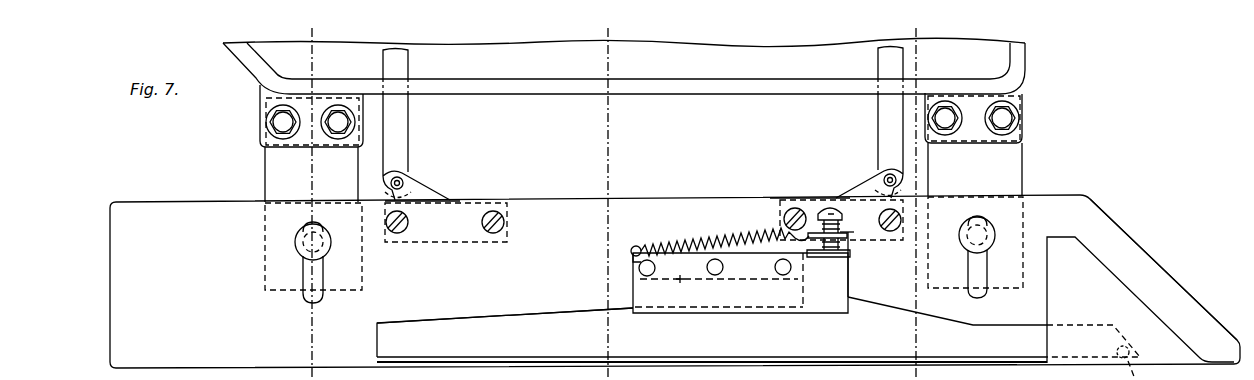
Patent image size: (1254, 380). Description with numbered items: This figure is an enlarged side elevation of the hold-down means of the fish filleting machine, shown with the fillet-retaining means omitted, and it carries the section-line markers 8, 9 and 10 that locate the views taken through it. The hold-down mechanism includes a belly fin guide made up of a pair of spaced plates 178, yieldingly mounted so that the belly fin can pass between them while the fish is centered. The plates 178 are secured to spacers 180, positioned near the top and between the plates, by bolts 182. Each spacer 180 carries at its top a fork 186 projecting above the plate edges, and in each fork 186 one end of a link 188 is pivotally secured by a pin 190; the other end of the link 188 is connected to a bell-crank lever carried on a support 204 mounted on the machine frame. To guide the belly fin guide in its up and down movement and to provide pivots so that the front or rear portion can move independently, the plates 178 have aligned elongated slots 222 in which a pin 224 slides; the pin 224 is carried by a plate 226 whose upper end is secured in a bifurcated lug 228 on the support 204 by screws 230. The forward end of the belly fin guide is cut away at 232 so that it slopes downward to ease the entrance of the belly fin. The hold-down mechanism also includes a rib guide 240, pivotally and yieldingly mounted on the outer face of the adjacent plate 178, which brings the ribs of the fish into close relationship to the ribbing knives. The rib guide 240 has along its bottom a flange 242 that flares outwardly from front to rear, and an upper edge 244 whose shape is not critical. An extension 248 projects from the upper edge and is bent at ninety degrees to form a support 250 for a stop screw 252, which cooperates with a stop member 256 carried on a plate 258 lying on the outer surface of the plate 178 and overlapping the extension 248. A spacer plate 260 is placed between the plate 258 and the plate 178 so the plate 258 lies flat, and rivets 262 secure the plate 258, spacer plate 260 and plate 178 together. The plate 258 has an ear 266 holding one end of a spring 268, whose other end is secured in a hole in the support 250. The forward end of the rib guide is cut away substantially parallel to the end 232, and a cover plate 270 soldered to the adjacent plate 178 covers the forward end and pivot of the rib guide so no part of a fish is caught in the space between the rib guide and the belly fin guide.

The section line 8- 8 is at (298, 33).
The section line 9- 9 is at (594, 30).
The section line 10- 10 is at (902, 30).
The plates 178 is at (1095, 211).
The spacers 180 is at (462, 203).
The bolts 182 is at (481, 222).
The fork 186 is at (421, 185).
The link 188 is at (409, 127).
The pin 190 is at (391, 183).
The support 204 is at (669, 82).
The elongated slots 222 is at (304, 298).
The pin 224 is at (305, 231).
The plate 226 is at (264, 172).
The bifurcated lug 228 is at (266, 128).
The screws 230 is at (337, 128).
The cut-away forward end 232 is at (1185, 291).
The rib guide 240 is at (441, 324).
The flange 242 is at (760, 359).
The upper edge 244 is at (526, 316).
The extension 248 is at (855, 270).
The support 250 is at (850, 239).
The stop screw 252 is at (841, 217).
The stop member 256 is at (838, 258).
The plate 258 is at (727, 314).
The spacer plate 260 is at (719, 280).
The rivets 262 is at (774, 266).
The ear 266 is at (638, 266).
The spring 268 is at (712, 244).
The cover plate 270 is at (1108, 276).